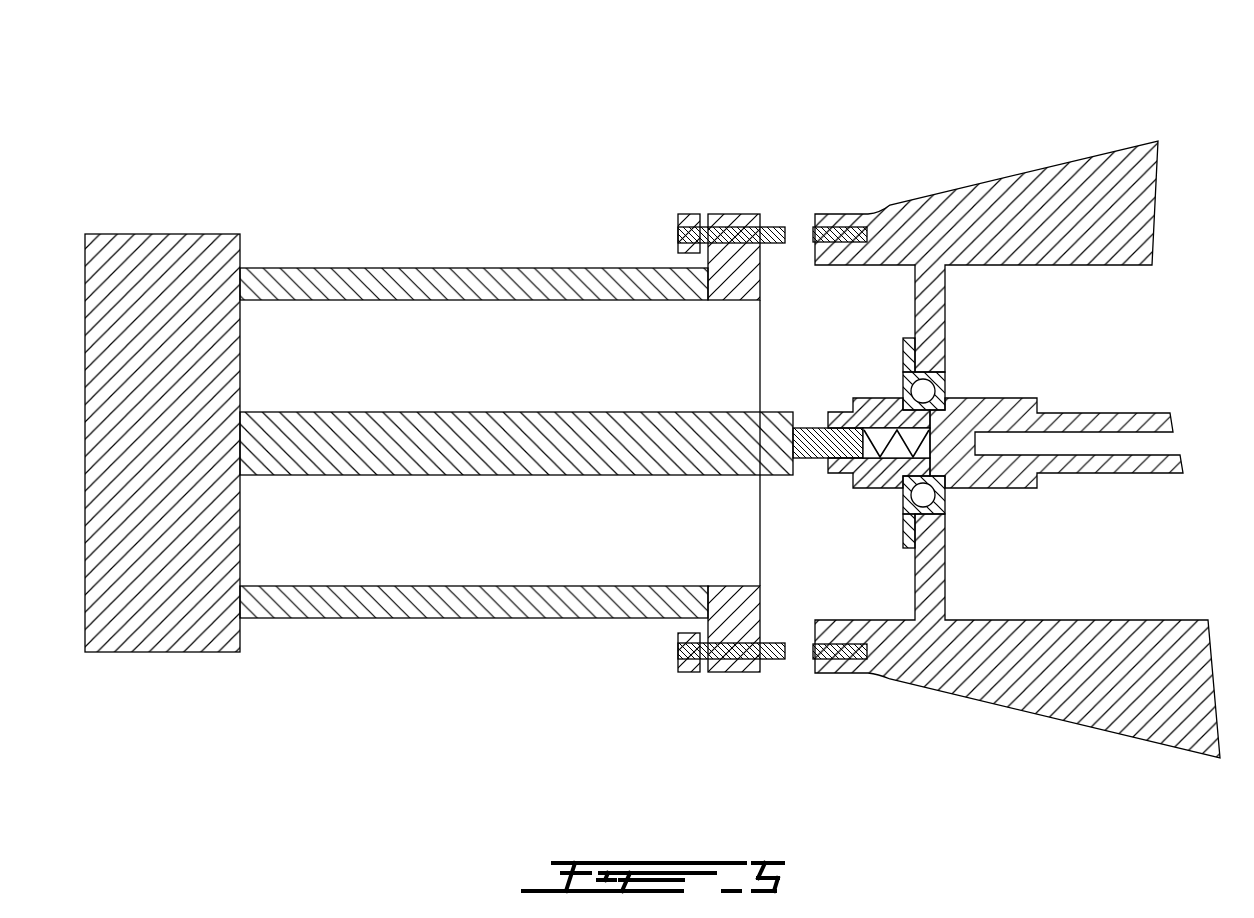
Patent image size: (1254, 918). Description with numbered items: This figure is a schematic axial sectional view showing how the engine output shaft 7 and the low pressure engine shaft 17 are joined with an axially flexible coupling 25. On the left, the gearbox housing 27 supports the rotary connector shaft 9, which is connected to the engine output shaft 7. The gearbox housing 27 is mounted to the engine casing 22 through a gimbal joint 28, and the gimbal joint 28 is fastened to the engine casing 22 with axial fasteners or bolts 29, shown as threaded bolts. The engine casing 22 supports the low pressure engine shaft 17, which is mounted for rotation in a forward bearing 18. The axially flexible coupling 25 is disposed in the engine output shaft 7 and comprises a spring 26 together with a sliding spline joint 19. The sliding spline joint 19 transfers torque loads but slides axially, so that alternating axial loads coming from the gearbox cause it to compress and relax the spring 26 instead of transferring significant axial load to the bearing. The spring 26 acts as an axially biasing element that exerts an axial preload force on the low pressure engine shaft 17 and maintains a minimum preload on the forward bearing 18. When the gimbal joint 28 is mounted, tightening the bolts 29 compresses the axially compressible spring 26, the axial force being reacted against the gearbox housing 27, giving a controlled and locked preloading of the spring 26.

The gearbox housing 27 is at (163, 234).
The gimbal joint 28 is at (355, 268).
The axial fasteners or bolts 29 is at (775, 227).
The rotary connector shaft 9 is at (450, 476).
The engine output shaft 7 is at (821, 459).
The sliding spline joint 19 is at (835, 412).
The spring 26 is at (882, 488).
The axially flexible coupling 25 is at (880, 366).
The low pressure engine shaft 17 is at (1083, 413).
The forward bearing 18 is at (945, 376).
The engine casing 22 is at (1072, 160).